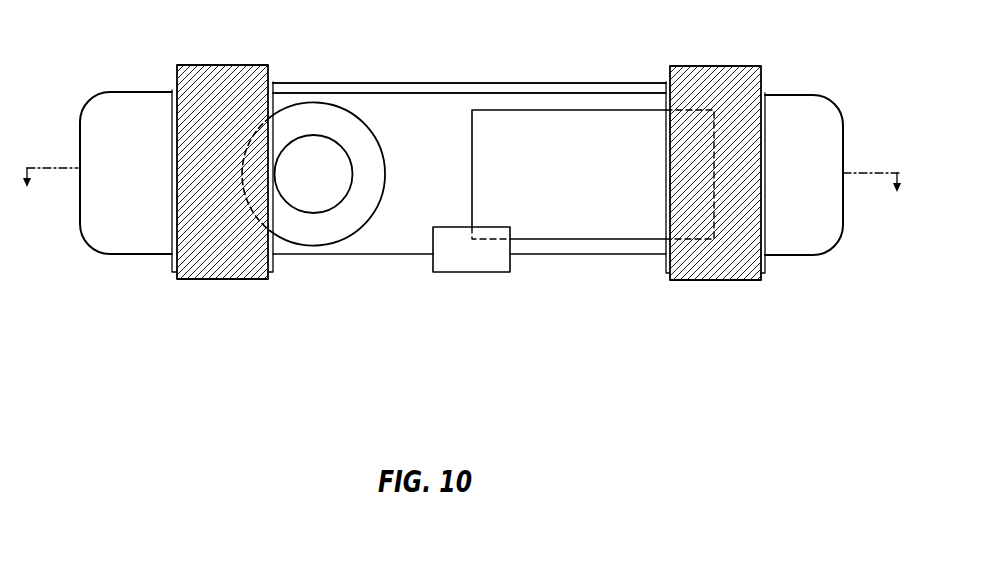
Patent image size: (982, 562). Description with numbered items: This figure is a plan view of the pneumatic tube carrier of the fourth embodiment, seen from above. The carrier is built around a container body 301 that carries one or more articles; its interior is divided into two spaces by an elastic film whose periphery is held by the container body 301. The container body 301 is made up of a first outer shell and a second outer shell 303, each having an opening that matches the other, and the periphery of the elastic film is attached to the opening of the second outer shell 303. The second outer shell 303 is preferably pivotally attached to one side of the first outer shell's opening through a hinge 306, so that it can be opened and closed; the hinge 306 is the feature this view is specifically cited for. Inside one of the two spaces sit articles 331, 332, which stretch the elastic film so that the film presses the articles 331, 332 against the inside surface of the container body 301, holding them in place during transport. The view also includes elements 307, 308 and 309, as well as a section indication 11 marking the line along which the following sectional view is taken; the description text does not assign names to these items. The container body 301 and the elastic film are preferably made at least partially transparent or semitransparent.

The container body 301 is at (806, 90).
The second outer shell 303 is at (783, 257).
The hinge 306 is at (423, 83).
The electronic component 307 is at (468, 273).
The right ferrule 308 is at (720, 66).
The left ferrule 309 is at (230, 65).
The article 331 is at (313, 246).
The article 332 is at (568, 240).
The section line 11- 11 is at (468, 195).